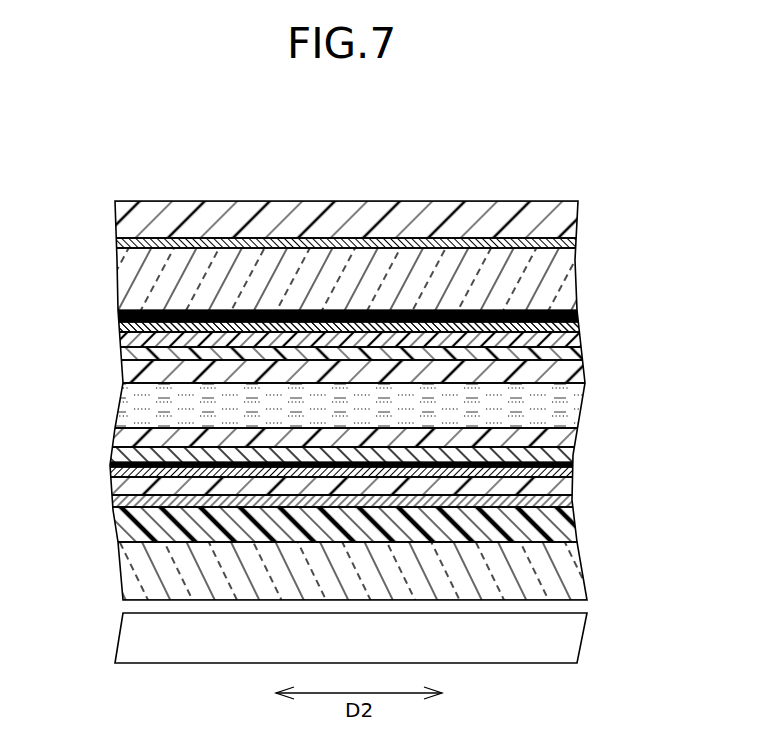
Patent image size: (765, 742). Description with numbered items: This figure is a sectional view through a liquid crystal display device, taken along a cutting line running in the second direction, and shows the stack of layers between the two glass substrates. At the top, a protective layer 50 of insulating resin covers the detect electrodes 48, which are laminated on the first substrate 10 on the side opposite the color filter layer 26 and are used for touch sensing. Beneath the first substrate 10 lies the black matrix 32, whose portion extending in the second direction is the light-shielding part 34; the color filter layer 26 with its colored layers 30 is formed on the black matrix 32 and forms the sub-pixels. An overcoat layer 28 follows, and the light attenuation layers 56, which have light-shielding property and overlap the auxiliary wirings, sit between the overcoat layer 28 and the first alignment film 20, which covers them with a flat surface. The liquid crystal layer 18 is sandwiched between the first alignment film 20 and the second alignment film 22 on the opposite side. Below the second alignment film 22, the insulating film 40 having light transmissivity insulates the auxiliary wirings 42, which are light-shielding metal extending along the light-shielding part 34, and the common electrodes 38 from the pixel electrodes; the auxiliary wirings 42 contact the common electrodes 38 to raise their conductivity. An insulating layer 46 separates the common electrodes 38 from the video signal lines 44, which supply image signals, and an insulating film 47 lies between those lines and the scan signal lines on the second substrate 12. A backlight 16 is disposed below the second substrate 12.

The protective layer 50 is at (563, 223).
The detect electrodes 48 is at (573, 244).
The first substrate 10 is at (565, 283).
The black matrix 32 is at (577, 316).
The light-shielding part 34 is at (350, 316).
The colored layers 30 is at (577, 327).
The color filter layer 26 is at (350, 327).
The overcoat layer 28 is at (579, 340).
The light attenuation layers 56 is at (581, 353).
The first alignment film 20 is at (582, 372).
The liquid crystal layer 18 is at (572, 404).
The second alignment film 22 is at (569, 438).
The insulating film 40 is at (570, 453).
The auxiliary wirings 42 is at (113, 463).
The common electrodes 38 is at (113, 472).
The insulating layer 46 is at (572, 486).
The video signal lines 44 is at (571, 501).
The insulating film 47 is at (573, 525).
The second substrate 12 is at (575, 571).
The backlight 16 is at (573, 641).